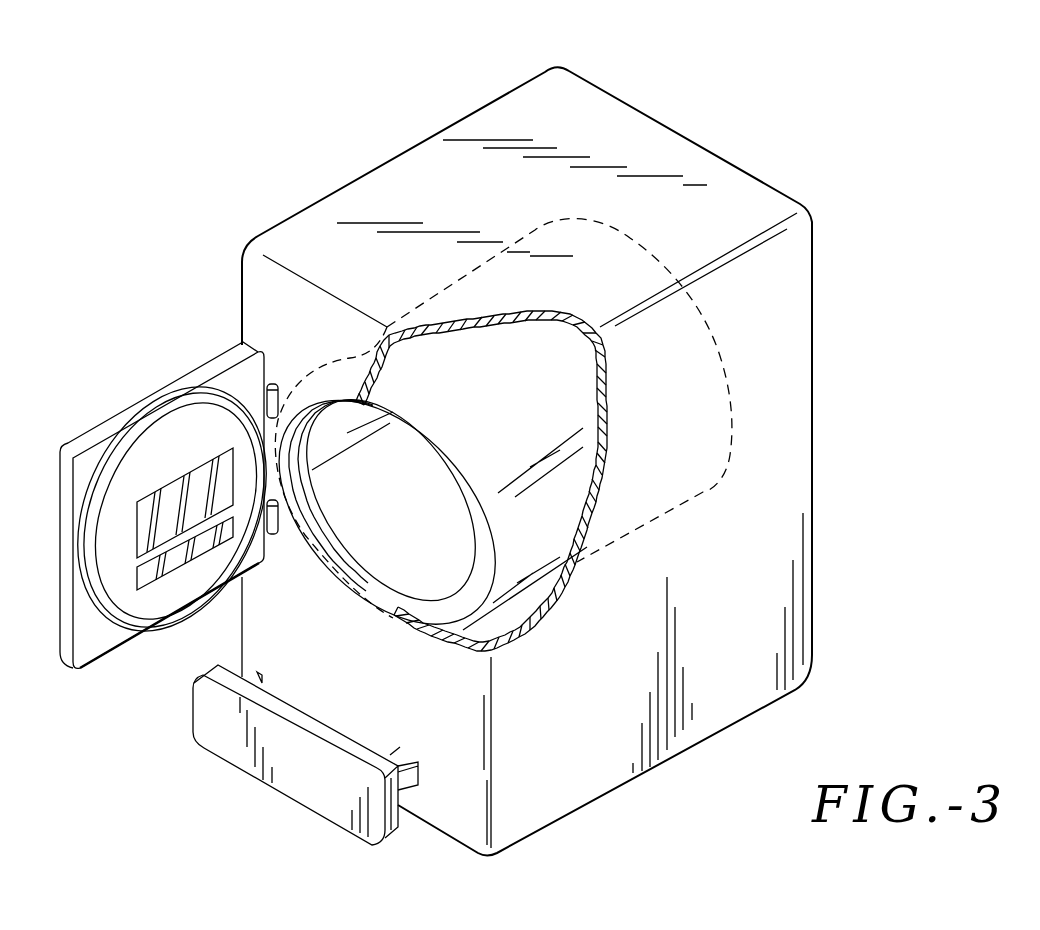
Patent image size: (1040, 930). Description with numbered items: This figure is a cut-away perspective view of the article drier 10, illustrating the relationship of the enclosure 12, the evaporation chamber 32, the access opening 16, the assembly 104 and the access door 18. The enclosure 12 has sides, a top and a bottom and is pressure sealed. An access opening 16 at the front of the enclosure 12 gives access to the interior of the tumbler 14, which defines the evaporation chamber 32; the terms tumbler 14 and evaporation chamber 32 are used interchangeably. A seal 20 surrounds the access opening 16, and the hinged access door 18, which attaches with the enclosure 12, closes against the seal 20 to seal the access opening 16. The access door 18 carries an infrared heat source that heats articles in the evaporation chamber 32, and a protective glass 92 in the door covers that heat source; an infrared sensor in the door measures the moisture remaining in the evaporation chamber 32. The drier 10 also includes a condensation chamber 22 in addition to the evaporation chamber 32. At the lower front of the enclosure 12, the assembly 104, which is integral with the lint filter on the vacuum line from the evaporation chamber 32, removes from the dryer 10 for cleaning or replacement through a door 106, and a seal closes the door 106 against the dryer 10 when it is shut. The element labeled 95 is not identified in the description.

The article drier 10 is at (737, 119).
The enclosure 12 is at (564, 75).
The tumbler 14 is at (567, 400).
The access opening 16 is at (343, 580).
The access door 18 is at (102, 418).
The seal 20 is at (197, 402).
The condensation chamber 22 is at (516, 614).
The evaporation chamber 32 is at (402, 498).
The protective glass 92 is at (193, 487).
The lower filter element 95 is at (183, 553).
The assembly 104 is at (388, 757).
The door 106 is at (293, 787).